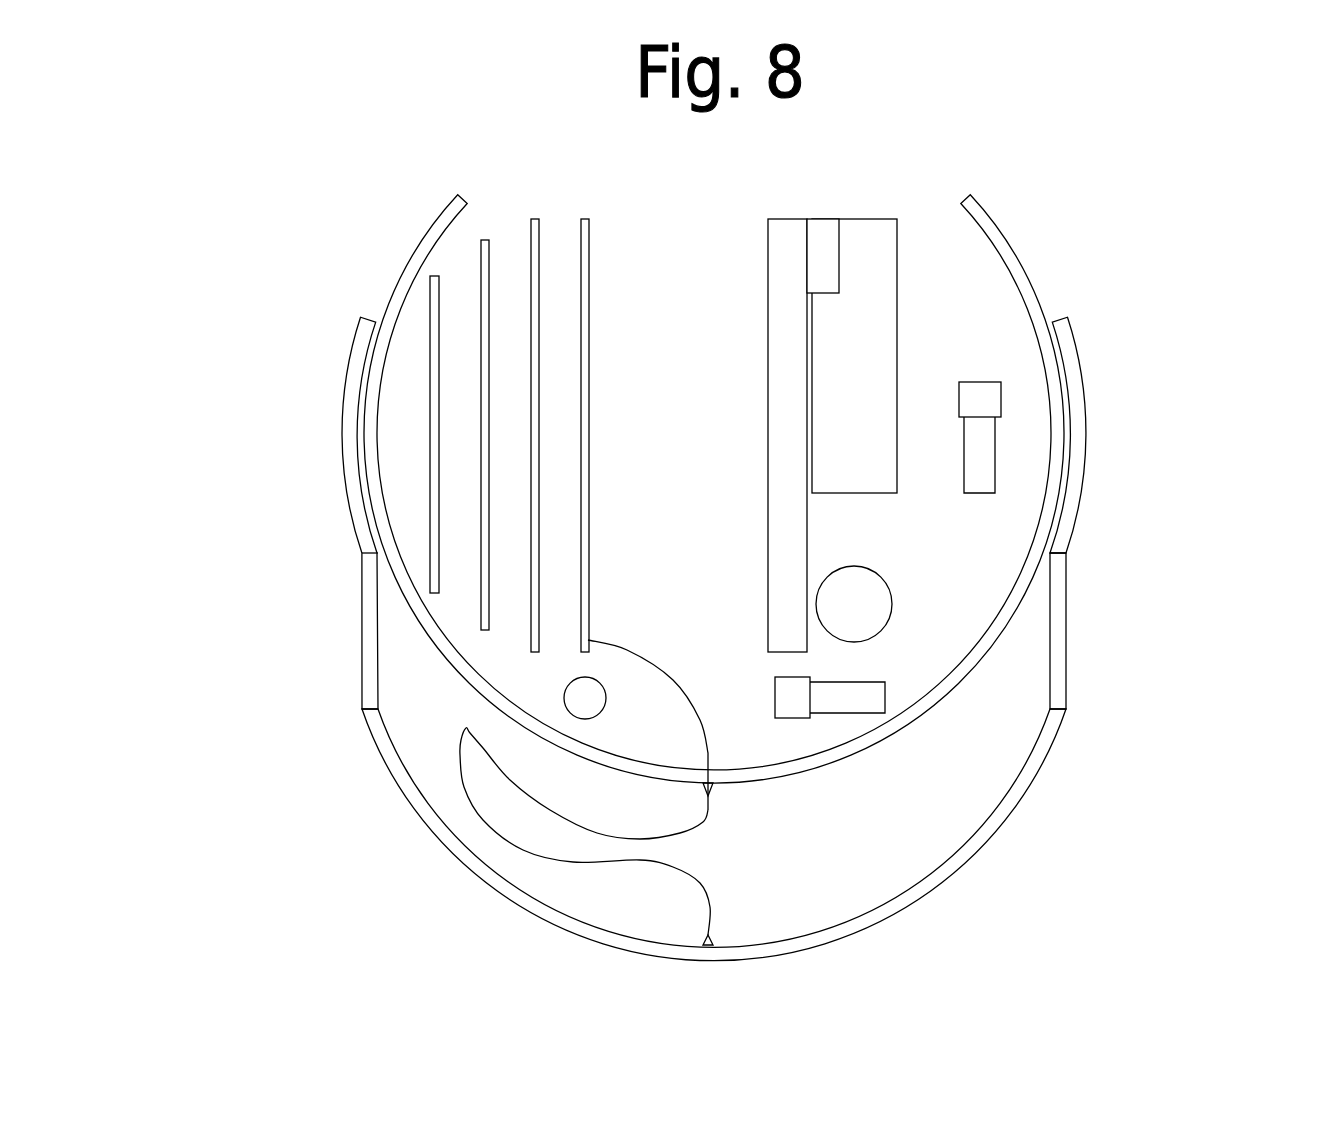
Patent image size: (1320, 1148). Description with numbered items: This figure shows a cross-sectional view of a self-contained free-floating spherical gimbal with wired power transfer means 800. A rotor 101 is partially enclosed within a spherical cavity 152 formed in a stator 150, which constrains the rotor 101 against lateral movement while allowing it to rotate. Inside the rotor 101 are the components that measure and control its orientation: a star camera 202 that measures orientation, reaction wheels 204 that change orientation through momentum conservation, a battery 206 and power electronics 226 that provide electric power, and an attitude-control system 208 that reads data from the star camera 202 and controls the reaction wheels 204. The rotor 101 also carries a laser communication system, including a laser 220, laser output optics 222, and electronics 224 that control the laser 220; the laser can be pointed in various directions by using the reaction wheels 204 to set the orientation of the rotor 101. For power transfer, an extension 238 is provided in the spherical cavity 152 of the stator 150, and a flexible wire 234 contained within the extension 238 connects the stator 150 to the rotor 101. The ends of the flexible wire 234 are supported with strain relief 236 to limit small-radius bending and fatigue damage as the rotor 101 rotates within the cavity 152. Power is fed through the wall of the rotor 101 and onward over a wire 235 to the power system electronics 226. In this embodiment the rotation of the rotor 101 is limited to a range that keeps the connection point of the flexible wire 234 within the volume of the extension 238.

The self-contained free-floating spherical gimbal with wired power transfer means 800 is at (266, 160).
The rotor 101 is at (400, 275).
The stator 150 is at (1083, 502).
The spherical cavity 152 is at (1070, 437).
The extension 238 is at (978, 748).
The attitude-control system 208 is at (435, 274).
The electronics 224 is at (540, 207).
The power electronics 226 is at (592, 212).
The laser 220 is at (790, 307).
The star camera 202 is at (868, 260).
The laser output optics 222 is at (833, 238).
The reaction wheels 204 is at (997, 370).
The battery 206 is at (860, 610).
The wire 235 is at (633, 663).
The flexible wire 234 is at (458, 780).
The strain relief 236 is at (712, 792).